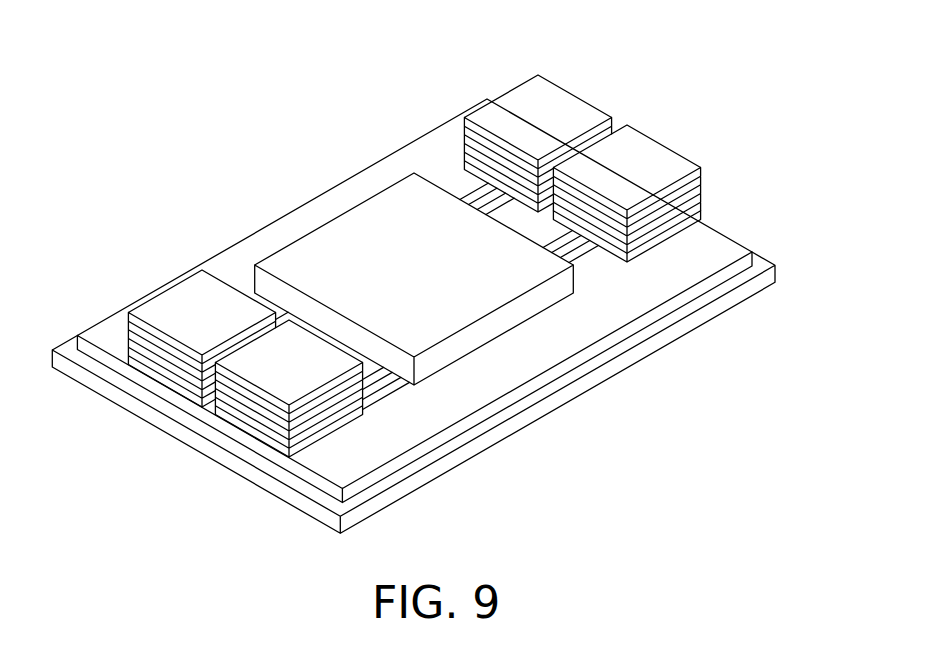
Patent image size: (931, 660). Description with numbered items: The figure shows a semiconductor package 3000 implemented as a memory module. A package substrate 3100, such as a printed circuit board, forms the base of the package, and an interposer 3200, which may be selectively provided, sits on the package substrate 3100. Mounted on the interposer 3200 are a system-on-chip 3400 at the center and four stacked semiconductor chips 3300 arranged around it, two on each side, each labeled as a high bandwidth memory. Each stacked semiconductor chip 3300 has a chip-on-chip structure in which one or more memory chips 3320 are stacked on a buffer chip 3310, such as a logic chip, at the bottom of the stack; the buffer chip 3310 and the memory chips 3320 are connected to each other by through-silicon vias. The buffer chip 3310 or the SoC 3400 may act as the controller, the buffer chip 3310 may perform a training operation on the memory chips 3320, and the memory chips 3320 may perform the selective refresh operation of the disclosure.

The semiconductor package 3000 is at (220, 55).
The package substrate 3100 is at (502, 432).
The interposer 3200 is at (555, 373).
The stacked semiconductor chip 3300 is at (580, 92).
The buffer chip 3310 is at (665, 237).
The memory chip 3320 is at (697, 192).
The system-on-chip (SoC) 3400 is at (338, 233).